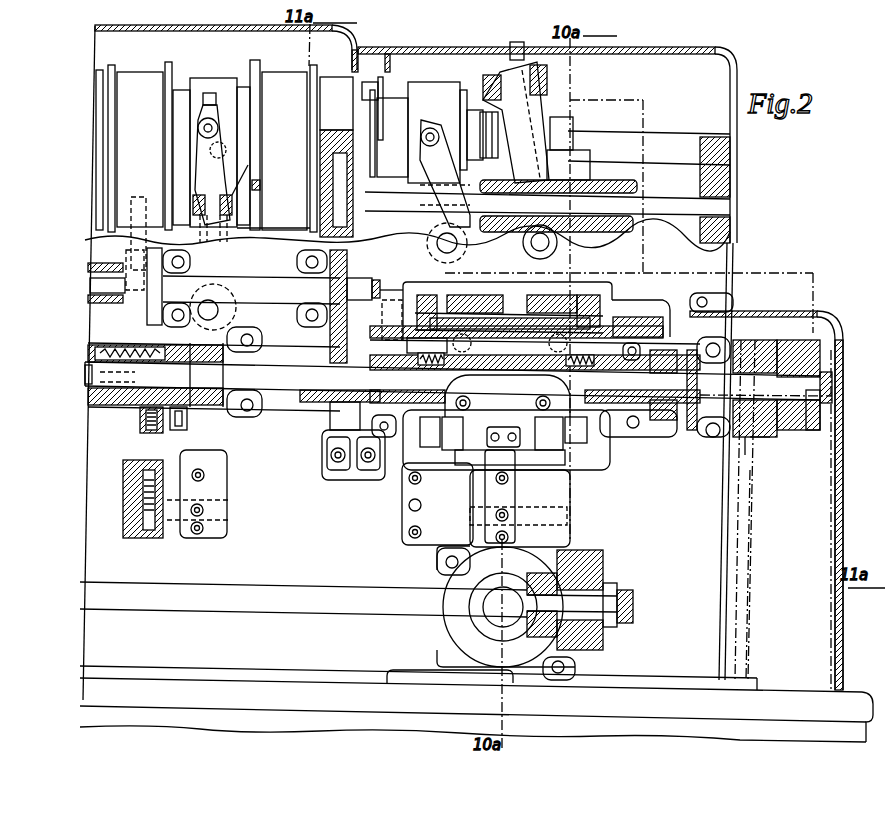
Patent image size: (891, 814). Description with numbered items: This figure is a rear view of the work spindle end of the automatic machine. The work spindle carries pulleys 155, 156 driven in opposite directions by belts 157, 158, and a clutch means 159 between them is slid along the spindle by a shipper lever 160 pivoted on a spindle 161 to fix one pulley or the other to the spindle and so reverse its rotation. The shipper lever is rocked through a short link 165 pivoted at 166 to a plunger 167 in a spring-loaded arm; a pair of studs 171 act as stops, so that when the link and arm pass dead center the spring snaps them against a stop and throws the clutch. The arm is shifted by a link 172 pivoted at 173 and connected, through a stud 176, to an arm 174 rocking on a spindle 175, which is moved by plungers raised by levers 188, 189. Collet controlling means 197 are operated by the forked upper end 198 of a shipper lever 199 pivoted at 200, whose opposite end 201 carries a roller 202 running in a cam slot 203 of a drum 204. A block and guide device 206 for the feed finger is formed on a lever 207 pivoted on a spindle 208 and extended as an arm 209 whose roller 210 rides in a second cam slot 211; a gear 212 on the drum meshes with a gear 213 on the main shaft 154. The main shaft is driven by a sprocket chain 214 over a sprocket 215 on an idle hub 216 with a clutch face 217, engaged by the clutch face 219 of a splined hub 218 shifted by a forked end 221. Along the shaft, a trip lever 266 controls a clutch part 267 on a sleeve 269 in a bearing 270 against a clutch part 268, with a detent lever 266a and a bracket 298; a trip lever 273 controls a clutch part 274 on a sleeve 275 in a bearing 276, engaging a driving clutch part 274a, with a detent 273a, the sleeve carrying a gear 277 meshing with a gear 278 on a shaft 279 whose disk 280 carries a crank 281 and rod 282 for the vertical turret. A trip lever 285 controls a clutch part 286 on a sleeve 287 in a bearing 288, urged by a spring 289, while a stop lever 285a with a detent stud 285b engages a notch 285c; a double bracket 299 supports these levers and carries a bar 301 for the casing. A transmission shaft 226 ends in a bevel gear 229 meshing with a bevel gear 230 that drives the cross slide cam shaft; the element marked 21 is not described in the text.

The plate 21 is at (111, 66).
The belt 157 is at (145, 80).
The pulley 155 is at (171, 72).
The clutch means 159 is at (222, 80).
The pulley 156 is at (256, 62).
The belt 158 is at (290, 80).
The short link 165 is at (216, 135).
The pivot 166 is at (240, 150).
The plunger 167 is at (240, 166).
The studs 171 is at (257, 184).
The shipper lever 160 is at (195, 218).
The rod 282 is at (140, 200).
The pivotal connection 173 is at (232, 235).
The link 172 is at (262, 243).
The collet controlling means 197 is at (430, 90).
The forked upper end 198 is at (422, 160).
The shipper lever 199 is at (425, 222).
The stud 176 is at (380, 226).
The adjustable block and guide device 206 is at (510, 56).
The lever 207 is at (552, 181).
The pivot 200 is at (458, 243).
The spindle 208 is at (558, 243).
The crank 281 is at (135, 260).
The disk 280 is at (147, 312).
The shaft 279 is at (265, 285).
The gear 278 is at (328, 322).
The spindle 161 is at (218, 310).
The sleeve 269 is at (120, 348).
The clutch part 267 is at (157, 350).
The main shaft 154 is at (285, 372).
The bearing 270 is at (95, 402).
The clutch part 268 is at (188, 412).
The trip lever 266 is at (140, 422).
The detent lever 266a is at (196, 425).
The bracket 298 is at (212, 476).
The lever 188 is at (325, 456).
The lever 189 is at (365, 480).
The sleeve 275 is at (290, 396).
The gear 277 is at (318, 408).
The bearing 276 is at (398, 423).
The cam slot 203 is at (445, 295).
The drum 204 is at (480, 297).
The cam slot 211 is at (515, 295).
The arm 209 is at (566, 290).
The gear 212 is at (616, 308).
The opposite end 201 is at (509, 321).
The driving clutch part 274a is at (510, 323).
The roller 202 is at (450, 347).
The clutch part 274 is at (466, 345).
The roller 210 is at (550, 346).
The spring 289 is at (623, 351).
The clutch part 286 is at (482, 386).
The detent stud 285b is at (503, 403).
The trip lever 273 is at (470, 428).
The stop lever 285a is at (503, 435).
The trip lever 285 is at (556, 437).
The notch 285c is at (526, 462).
The detent 273a is at (437, 504).
The double bracket 299 is at (508, 493).
The bar 301 is at (541, 510).
The bevel gear 230 is at (466, 645).
The bevel gear 229 is at (532, 589).
The transmission shaft 226 is at (318, 590).
The gear 213 is at (613, 436).
The bearing 288 is at (665, 355).
The sleeve 287 is at (686, 426).
The clutch face 219 is at (758, 356).
The clutch face 217 is at (790, 438).
The sprocket 215 is at (745, 450).
The hub 216 is at (760, 446).
The hub 218 is at (820, 440).
The sprocket chain 214 is at (752, 531).
The forked end 221 is at (812, 312).
The arm 174 is at (392, 295).
The spindle 175 is at (386, 311).